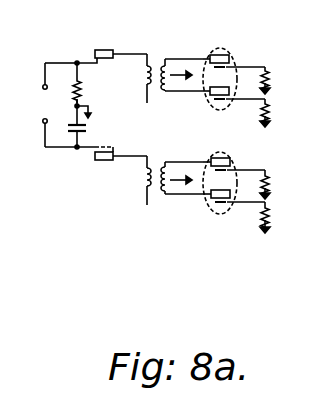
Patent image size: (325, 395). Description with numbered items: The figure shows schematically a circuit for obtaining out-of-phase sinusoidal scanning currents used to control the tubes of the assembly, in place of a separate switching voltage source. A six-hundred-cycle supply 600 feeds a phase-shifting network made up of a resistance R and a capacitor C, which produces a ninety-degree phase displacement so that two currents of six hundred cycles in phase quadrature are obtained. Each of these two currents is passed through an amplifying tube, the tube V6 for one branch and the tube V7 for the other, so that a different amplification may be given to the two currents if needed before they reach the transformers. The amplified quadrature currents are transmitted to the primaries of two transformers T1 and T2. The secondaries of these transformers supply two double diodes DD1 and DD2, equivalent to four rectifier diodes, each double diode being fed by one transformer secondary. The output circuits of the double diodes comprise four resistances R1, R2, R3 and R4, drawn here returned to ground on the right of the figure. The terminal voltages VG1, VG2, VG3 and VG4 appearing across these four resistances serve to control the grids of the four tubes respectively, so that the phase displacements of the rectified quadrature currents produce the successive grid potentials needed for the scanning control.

The 600-cycle supply 600 is at (50, 107).
The resistance of phase-shifting circuit R is at (82, 89).
The capacitor of phase-shifting circuit C is at (83, 127).
The amplifying tube V6 is at (112, 47).
The amplifying tube V7 is at (121, 163).
The transformer T1 is at (175, 70).
The transformer T2 is at (161, 180).
The double diode DD1 is at (215, 47).
The double diode DD2 is at (218, 153).
The output resistance R1 is at (256, 80).
The output resistance R2 is at (256, 112).
The output resistance R3 is at (257, 184).
The output resistance R4 is at (257, 216).
The grid control voltage VG1 is at (284, 77).
The grid control voltage VG2 is at (285, 109).
The grid control voltage VG3 is at (284, 180).
The grid control voltage VG4 is at (285, 214).